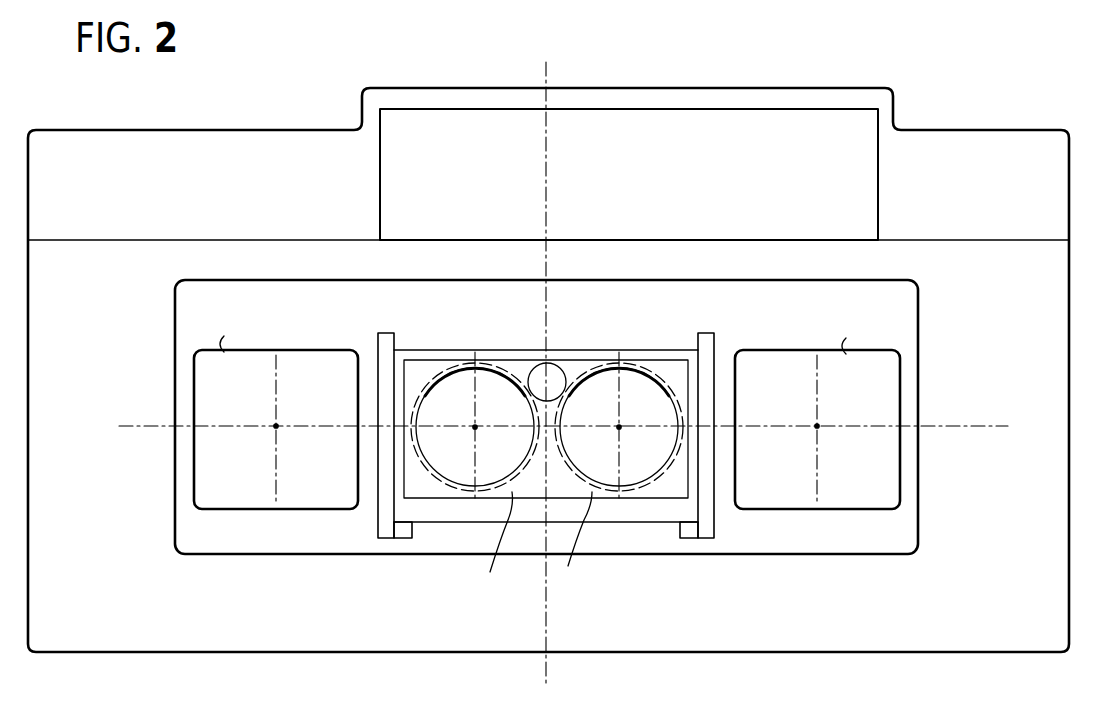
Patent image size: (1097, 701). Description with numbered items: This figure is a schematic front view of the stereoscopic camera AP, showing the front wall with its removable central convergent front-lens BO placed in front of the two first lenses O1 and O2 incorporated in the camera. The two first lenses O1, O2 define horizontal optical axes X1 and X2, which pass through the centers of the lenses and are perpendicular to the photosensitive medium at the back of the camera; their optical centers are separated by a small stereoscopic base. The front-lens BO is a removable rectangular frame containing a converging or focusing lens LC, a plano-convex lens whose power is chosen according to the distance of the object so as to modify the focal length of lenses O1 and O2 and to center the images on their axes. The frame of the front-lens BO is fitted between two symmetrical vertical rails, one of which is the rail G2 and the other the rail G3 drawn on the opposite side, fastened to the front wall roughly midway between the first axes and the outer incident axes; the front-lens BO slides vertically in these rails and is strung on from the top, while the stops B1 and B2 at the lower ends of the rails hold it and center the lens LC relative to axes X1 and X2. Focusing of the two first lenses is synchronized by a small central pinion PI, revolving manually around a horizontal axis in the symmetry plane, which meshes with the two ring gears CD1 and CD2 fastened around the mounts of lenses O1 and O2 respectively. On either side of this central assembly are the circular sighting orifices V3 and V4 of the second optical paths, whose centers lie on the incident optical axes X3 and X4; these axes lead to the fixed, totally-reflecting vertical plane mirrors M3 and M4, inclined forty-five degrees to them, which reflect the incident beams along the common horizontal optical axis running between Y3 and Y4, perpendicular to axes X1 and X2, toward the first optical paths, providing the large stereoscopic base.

The camera AP is at (190, 130).
The focusing lens LC is at (538, 492).
The horizontal optical axis Y4 is at (319, 429).
The horizontal optical axis Y3 is at (792, 429).
The second fixed plane mirror M4 is at (212, 486).
The sighting orifice V4 is at (224, 332).
The incident optical axis X4 is at (278, 424).
The second fixed plane mirror M3 is at (857, 492).
The sighting orifice V3 is at (848, 333).
The incident optical axis X3 is at (819, 422).
The rail G2 is at (378, 520).
The stop B2 is at (401, 530).
The guide G3 is at (714, 516).
The stop B1 is at (707, 530).
The front-lens BO is at (398, 352).
The central pinion PI is at (556, 370).
The first lens O2 is at (462, 472).
The optical axis X2 is at (478, 417).
The ring gear CD2 is at (490, 550).
The first lens O1 is at (634, 472).
The optical axis X1 is at (622, 417).
The ring gear CD1 is at (579, 544).